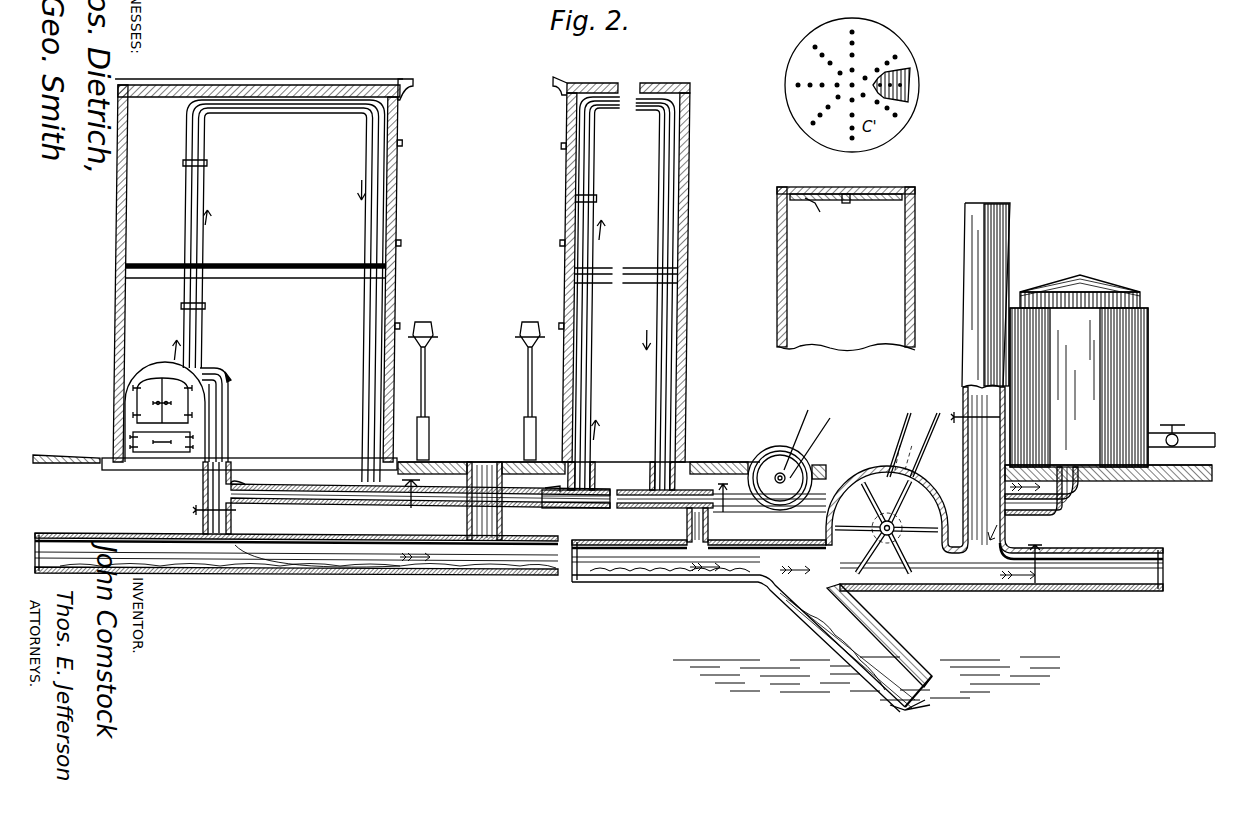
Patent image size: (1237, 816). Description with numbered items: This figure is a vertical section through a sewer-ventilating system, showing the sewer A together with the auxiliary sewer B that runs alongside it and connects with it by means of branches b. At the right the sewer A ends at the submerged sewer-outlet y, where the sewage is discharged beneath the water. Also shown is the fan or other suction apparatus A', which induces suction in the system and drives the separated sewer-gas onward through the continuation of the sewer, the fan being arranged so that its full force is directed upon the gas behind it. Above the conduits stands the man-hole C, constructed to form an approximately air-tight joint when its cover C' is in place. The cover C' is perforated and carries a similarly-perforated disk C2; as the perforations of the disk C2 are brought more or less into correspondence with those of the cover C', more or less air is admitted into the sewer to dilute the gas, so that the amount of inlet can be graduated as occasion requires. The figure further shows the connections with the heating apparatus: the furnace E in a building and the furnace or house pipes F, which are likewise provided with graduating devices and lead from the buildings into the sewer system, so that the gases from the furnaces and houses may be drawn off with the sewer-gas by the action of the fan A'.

The sewer A is at (609, 549).
The fan or other suction apparatus A' is at (897, 480).
The auxiliary sewer B is at (420, 503).
The man-hole C is at (846, 269).
The man-hole cover C' is at (484, 485).
The perforated disk C2 is at (819, 212).
The furnace E is at (178, 400).
The furnace or house pipes F is at (619, 283).
The branches b is at (707, 513).
The sewer-outlet y is at (930, 665).